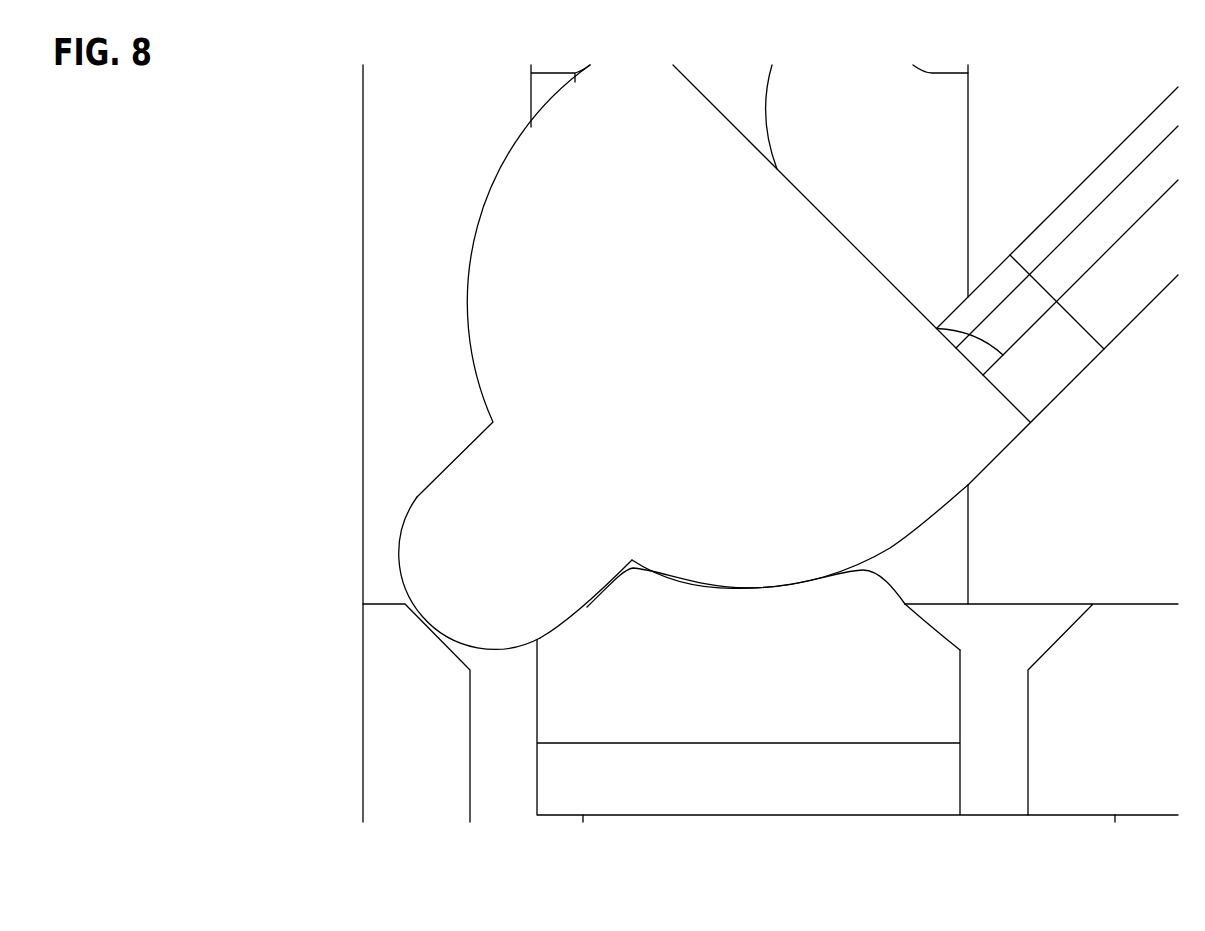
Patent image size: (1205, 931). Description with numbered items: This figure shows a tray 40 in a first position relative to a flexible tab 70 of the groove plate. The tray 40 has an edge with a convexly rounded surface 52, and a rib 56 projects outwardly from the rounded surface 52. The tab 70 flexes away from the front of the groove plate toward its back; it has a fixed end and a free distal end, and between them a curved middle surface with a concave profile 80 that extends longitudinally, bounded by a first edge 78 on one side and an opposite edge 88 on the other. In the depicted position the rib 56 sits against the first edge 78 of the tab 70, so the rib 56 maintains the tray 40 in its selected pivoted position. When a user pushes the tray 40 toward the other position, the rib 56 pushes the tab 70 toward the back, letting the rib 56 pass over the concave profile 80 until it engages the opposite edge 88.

The tray 40 is at (1070, 378).
The rounded surface 52 is at (473, 366).
The rib 56 is at (497, 651).
The tab 70 is at (738, 710).
The first edge 78 is at (587, 607).
The concave profile 80 is at (775, 588).
The opposite edge 88 is at (918, 613).